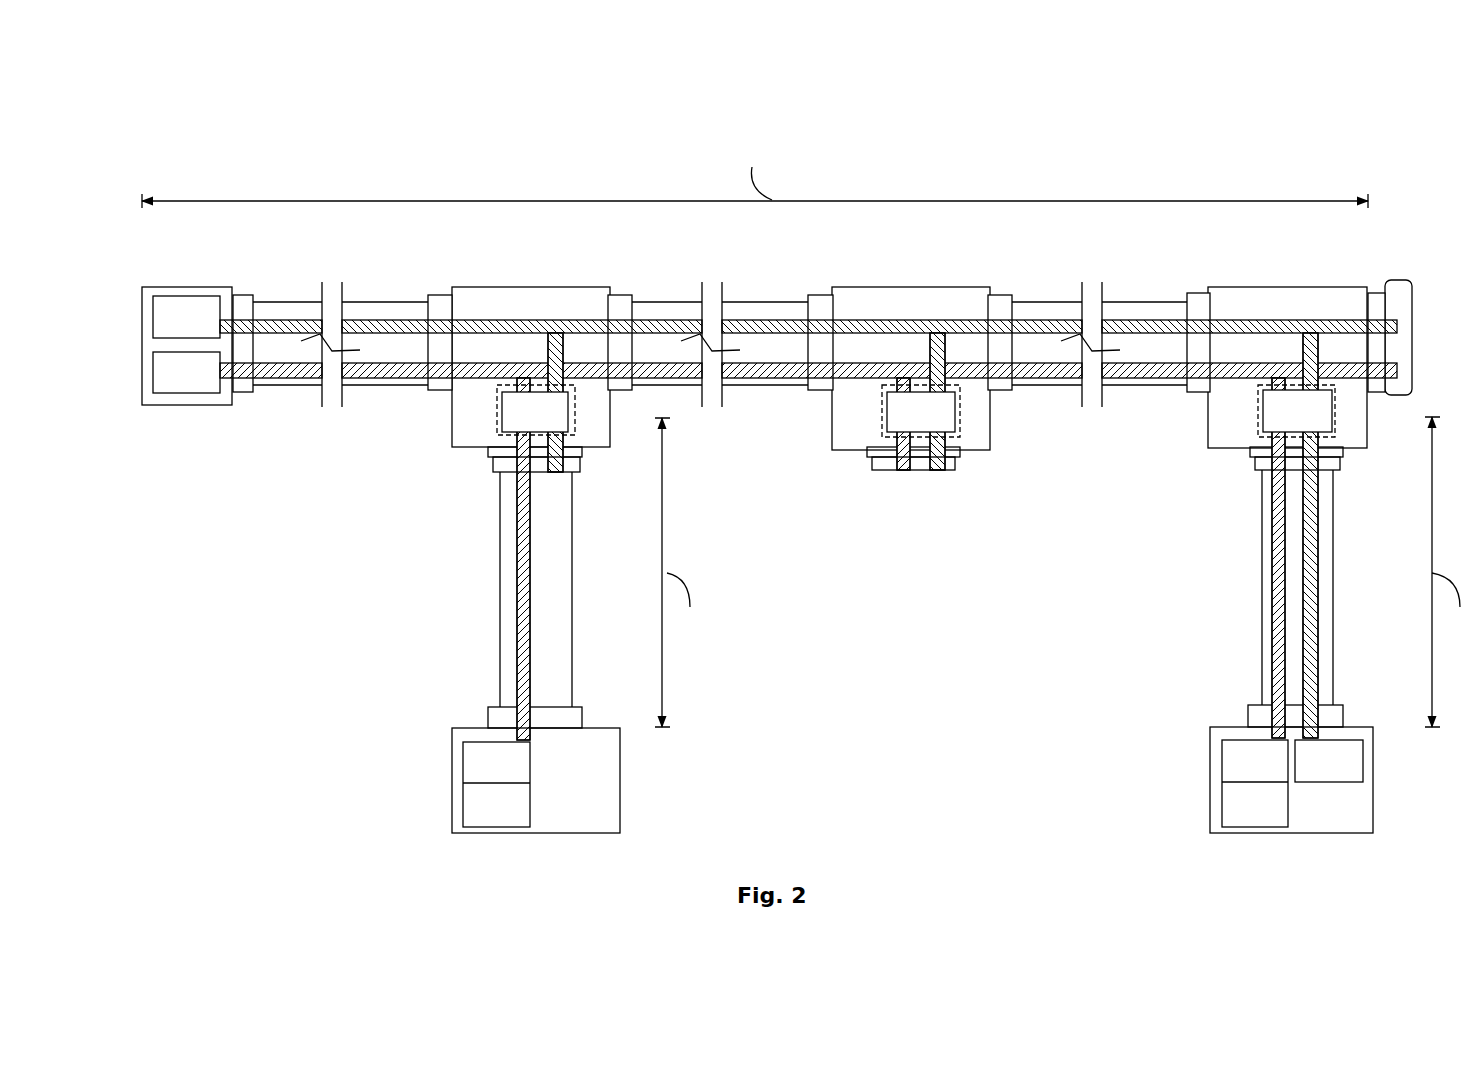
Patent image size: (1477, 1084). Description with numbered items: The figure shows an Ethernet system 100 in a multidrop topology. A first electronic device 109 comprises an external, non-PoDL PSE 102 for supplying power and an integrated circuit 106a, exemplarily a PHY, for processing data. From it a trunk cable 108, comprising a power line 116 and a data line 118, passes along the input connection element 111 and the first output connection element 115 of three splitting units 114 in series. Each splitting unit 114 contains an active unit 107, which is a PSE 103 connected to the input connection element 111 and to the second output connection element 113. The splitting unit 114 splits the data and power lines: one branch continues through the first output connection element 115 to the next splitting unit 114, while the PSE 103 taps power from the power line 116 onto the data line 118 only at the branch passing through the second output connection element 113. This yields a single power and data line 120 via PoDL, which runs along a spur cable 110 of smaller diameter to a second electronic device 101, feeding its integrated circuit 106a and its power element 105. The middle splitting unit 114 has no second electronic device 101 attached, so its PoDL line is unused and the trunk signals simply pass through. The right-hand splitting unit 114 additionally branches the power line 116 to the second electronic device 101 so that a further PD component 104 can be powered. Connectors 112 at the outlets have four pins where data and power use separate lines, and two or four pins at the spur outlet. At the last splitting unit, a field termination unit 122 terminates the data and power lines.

The Ethernet system 100 is at (190, 130).
The second electronic device 101 is at (460, 735).
The external PSE 102 is at (212, 307).
The PSE 103 is at (517, 412).
The PD component 104 is at (1353, 760).
The power element 105 is at (472, 810).
The integrated circuit 106a is at (178, 383).
The active unit 107 is at (572, 428).
The trunk cable 108 is at (350, 396).
The first electronic device 109 is at (158, 291).
The spur cable 110 is at (497, 645).
The input connection element 111 is at (433, 387).
The connector 112 is at (240, 393).
The second output connection element 113 is at (497, 462).
The splitting unit 114 is at (535, 298).
The first output connection element 115 is at (1375, 298).
The power line 116 is at (305, 322).
The data line 118 is at (285, 372).
The power and data line 120 is at (520, 568).
The field termination unit 122 is at (1412, 302).